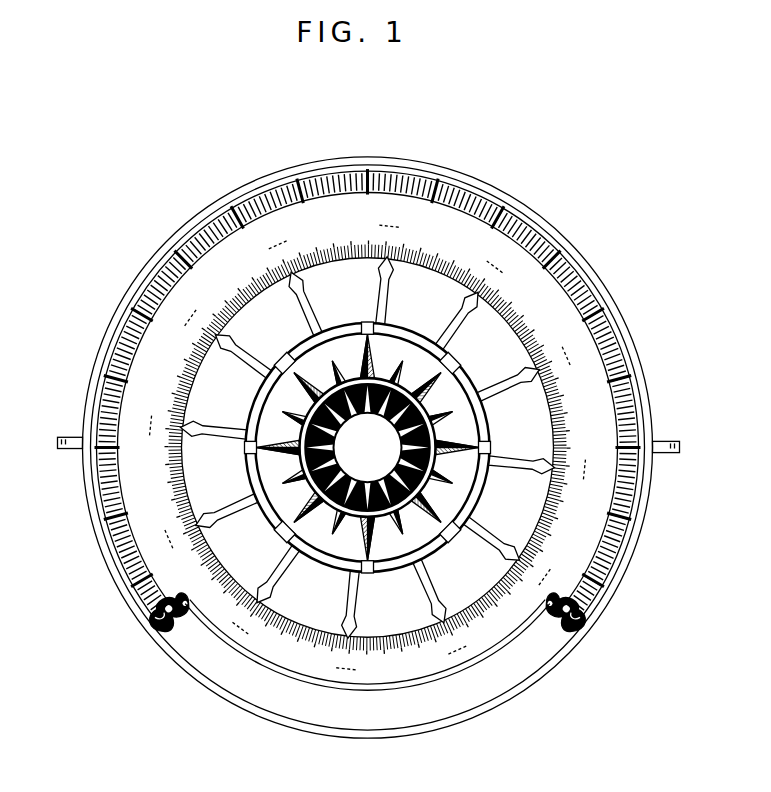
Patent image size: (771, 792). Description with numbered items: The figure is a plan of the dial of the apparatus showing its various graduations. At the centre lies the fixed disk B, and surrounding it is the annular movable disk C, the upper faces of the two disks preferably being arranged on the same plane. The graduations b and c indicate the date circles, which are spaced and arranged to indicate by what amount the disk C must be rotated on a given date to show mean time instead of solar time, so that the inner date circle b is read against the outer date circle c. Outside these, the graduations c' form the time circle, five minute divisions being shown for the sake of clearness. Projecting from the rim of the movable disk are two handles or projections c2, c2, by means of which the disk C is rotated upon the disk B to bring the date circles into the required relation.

The movable disk C is at (368, 436).
The graduations of the time circle c' is at (367, 392).
The graduations of the date circle c is at (348, 440).
The graduations of the date circle b is at (337, 453).
The fixed disk B is at (368, 447).
The handles or projections c2 is at (373, 452).